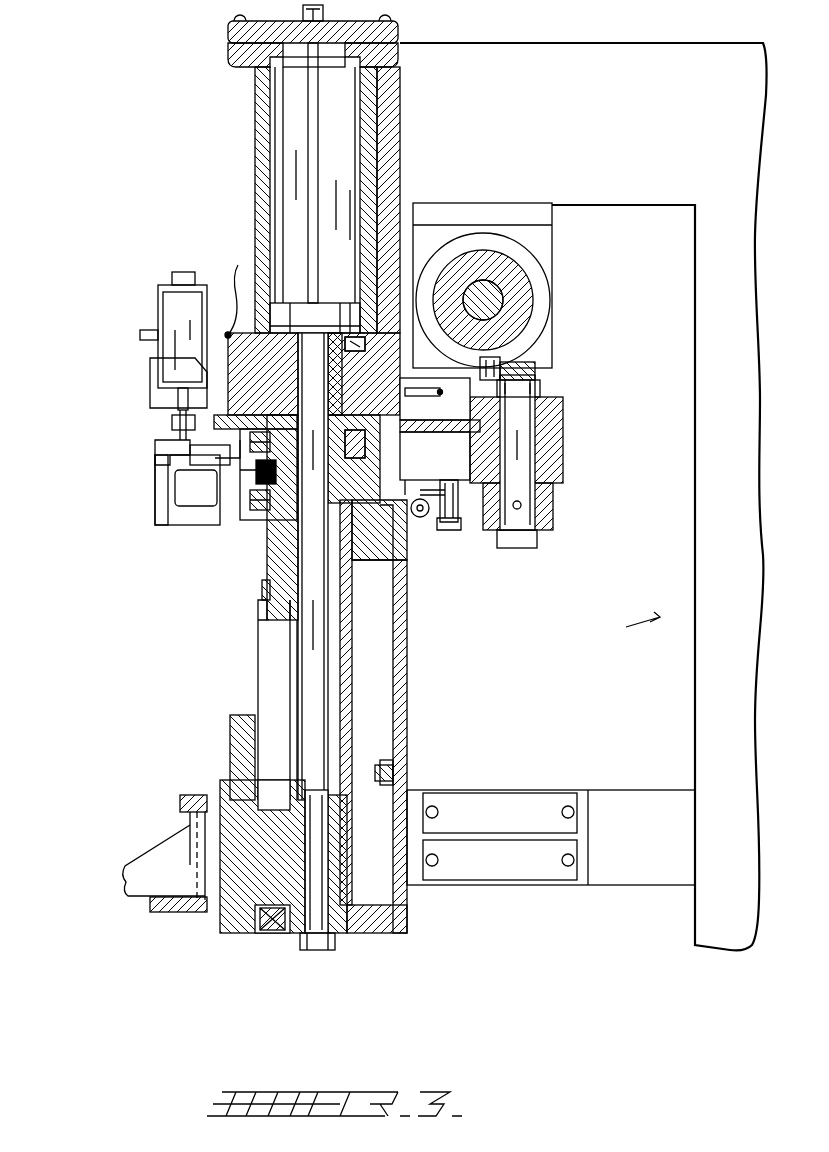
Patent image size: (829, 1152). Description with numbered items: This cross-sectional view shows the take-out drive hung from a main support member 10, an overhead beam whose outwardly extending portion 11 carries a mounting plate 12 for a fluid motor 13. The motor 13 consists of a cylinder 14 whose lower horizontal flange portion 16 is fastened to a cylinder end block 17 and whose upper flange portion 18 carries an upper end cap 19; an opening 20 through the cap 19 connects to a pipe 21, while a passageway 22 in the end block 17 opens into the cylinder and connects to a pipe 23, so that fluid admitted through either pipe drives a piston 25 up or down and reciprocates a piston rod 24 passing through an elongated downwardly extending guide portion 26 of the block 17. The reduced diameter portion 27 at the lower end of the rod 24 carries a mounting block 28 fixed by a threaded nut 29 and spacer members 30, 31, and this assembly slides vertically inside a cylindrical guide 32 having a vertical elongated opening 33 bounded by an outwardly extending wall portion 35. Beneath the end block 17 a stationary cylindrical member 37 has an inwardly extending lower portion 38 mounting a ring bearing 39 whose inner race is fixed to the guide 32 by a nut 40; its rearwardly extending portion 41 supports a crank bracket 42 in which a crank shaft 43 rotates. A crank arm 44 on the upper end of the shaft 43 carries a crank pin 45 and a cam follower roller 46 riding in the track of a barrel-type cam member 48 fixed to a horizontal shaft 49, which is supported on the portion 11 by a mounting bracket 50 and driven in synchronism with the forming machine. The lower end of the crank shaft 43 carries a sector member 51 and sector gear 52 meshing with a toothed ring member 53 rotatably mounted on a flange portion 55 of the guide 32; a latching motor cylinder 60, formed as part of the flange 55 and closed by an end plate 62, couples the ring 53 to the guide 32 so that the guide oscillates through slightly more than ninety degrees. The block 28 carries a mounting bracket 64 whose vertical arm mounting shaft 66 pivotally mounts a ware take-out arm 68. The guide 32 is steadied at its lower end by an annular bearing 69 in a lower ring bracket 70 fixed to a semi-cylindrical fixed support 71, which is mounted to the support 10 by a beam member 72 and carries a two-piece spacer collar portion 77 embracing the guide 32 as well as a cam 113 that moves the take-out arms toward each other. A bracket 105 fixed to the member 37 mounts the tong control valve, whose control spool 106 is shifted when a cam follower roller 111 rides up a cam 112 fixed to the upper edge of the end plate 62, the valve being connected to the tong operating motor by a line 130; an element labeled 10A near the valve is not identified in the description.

The main support member 10 is at (626, 627).
The sensor 10A is at (176, 322).
The extending portion 11 is at (528, 138).
The mounting plate 12 is at (397, 95).
The fluid motor 13 is at (315, 167).
The cylinder 14 is at (262, 164).
The horizontal flange portion 16 is at (236, 295).
The cylinder end block 17 is at (415, 380).
The flange portion 18 is at (240, 56).
The upper end cap 19 is at (228, 34).
The opening 20 is at (313, 60).
The pipe 21 is at (323, 12).
The passageway 22 is at (365, 343).
The pipe 23 is at (440, 394).
The piston rod 24 is at (262, 590).
The piston 25 is at (318, 308).
The guide portion 26 is at (300, 566).
The reduced diameter portion 27 is at (312, 920).
The mounting block 28 is at (220, 925).
The threaded nut 29 is at (322, 950).
The spacer member 30 is at (400, 790).
The spacer member 31 is at (337, 933).
The cylindrical guide 32 is at (355, 661).
The vertical elongated opening 33 is at (258, 636).
The vertical wall portion 35 is at (275, 660).
The cylindrical member 37 is at (410, 450).
The inwardly extending lower portion 38 is at (235, 462).
The ring bearing 39 is at (400, 440).
The nut 40 is at (225, 458).
The rearwardly extending portion 41 is at (535, 428).
The crank bracket 42 is at (550, 455).
The crank shaft 43 is at (520, 490).
The crank arm 44 is at (540, 384).
The crank pin 45 is at (520, 372).
The cam follower roller 46 is at (490, 362).
The barrel-type cam member 48 is at (520, 280).
The horizontal shaft 49 is at (490, 303).
The mounting bracket 50 is at (513, 285).
The sector member 51 is at (456, 522).
The sector gear 52 is at (422, 518).
The ring member 53 is at (256, 512).
The flange portion 55 is at (385, 540).
The cylinder 60 is at (180, 490).
The end closing plate 62 is at (160, 518).
The mounting bracket 64 is at (230, 780).
The vertical arm mounting shaft 66 is at (192, 795).
The ware take-out arm 68 is at (134, 866).
The annular bearing 69 is at (265, 933).
The lower ring bracket 70 is at (398, 930).
The semi-cylindrical fixed support 71 is at (407, 690).
The beam member 72 is at (548, 805).
The spacer collar portion 77 is at (388, 568).
The bracket 105 is at (160, 378).
The control spool 106 is at (178, 400).
The cam follower roller 111 is at (172, 422).
The cam 112 is at (160, 452).
The cam 113 is at (395, 775).
The line 130 is at (140, 337).